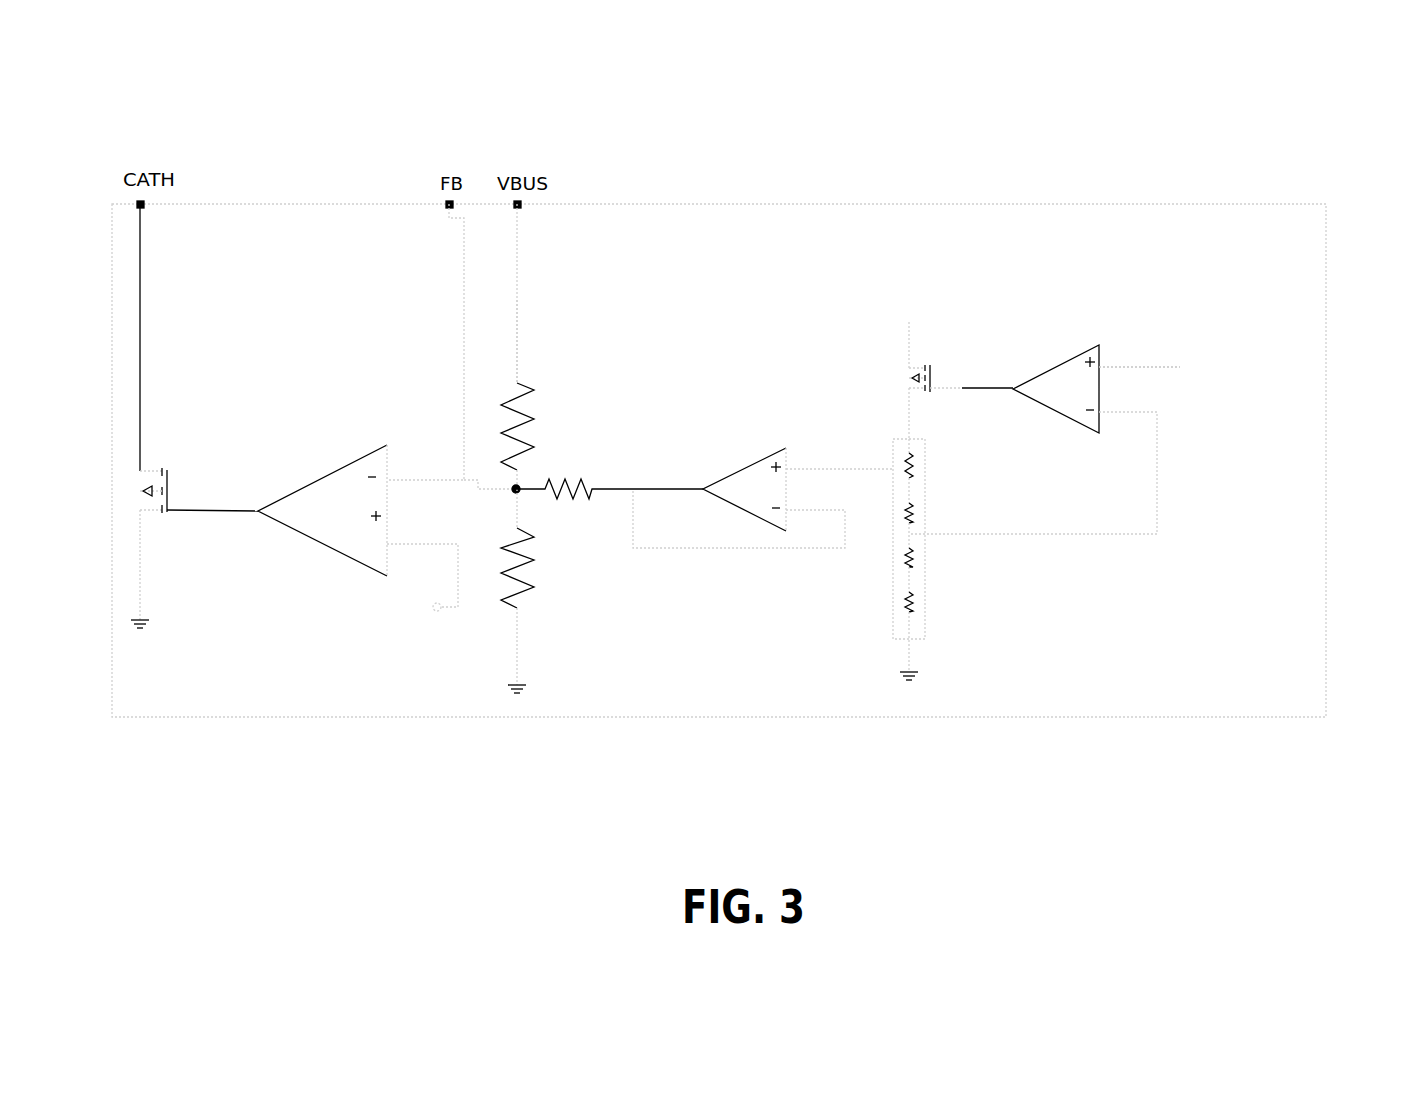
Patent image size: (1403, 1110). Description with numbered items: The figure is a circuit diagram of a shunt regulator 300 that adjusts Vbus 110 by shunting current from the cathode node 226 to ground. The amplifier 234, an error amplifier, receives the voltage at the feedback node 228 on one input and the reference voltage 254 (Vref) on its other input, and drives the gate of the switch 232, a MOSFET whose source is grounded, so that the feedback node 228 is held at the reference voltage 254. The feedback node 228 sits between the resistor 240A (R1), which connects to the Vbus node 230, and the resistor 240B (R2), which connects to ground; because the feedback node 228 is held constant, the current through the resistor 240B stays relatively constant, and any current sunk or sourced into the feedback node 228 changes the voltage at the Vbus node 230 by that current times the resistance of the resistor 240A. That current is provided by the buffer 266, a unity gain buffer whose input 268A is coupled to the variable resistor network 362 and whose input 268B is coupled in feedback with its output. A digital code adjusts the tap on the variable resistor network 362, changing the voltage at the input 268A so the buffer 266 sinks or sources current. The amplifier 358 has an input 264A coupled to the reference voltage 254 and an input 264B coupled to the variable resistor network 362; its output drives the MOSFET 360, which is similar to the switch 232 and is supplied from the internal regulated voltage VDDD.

The shunt regulator 300 is at (403, 29).
The Vbus 110 is at (667, 194).
The cathode node 226 is at (207, 296).
The feedback node 228 is at (424, 276).
The Vbus node 230 is at (692, 261).
The switch 232 is at (193, 575).
The amplifier 234 is at (345, 532).
The reference voltage 254 is at (1277, 398).
The resistor R1 240A is at (605, 424).
The resistor R2 240B is at (551, 591).
The buffer 266 is at (830, 444).
The input of buffer 268A is at (876, 466).
The input of buffer 268B is at (860, 589).
The amplifier 358 is at (1152, 329).
The MOSFET 360 is at (880, 393).
The variable resistor network 362 is at (1086, 599).
The input of amplifier 264A is at (1167, 361).
The input of amplifier 264B is at (1227, 451).